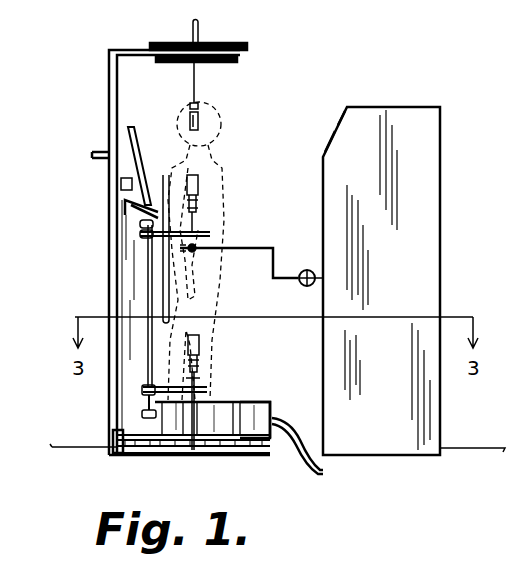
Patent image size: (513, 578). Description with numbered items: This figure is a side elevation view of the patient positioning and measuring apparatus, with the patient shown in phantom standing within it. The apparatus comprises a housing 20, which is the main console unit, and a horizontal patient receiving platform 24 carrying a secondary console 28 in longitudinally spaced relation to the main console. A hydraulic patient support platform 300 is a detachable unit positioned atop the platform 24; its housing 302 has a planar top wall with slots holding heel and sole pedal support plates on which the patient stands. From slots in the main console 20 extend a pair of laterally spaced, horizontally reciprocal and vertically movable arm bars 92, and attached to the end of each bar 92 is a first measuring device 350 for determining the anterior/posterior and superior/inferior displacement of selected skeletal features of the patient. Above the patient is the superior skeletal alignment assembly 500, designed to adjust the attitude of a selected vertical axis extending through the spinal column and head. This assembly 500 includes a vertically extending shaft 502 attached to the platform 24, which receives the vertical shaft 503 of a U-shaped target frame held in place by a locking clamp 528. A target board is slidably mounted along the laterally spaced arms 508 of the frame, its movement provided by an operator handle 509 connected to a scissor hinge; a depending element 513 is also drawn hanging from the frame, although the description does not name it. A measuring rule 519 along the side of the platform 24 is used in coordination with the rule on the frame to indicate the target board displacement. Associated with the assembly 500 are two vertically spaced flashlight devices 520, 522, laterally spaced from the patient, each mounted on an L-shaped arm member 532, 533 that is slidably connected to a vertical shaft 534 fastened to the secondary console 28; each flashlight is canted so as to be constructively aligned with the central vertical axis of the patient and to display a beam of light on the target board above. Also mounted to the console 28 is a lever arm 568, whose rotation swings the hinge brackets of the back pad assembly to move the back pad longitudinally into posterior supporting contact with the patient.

The housing 20 is at (438, 232).
The horizontal patient receiving platform 24 is at (277, 450).
The secondary console 28 is at (130, 290).
The arm bars 92 is at (304, 285).
The hydraulic patient support platform 300 is at (248, 380).
The housing 302 is at (263, 402).
The first measuring device 350 is at (264, 225).
The superior skeletal alignment assembly 500 is at (254, 86).
The vertically extending shaft 502 is at (116, 240).
The vertical shaft 503 is at (118, 92).
The laterally spaced arms 508 is at (247, 48).
The operator handle 509 is at (92, 152).
The suspension rod 513 is at (196, 86).
The measuring rule 519 is at (120, 452).
The flashlight device 520 is at (217, 167).
The flashlight device 522 is at (205, 348).
The locking clamp 528 is at (120, 185).
The L-shaped arm member 532 is at (221, 204).
The L-shaped arm member 533 is at (177, 412).
The vertical shaft 534 is at (148, 372).
The lever arm 568 is at (178, 108).